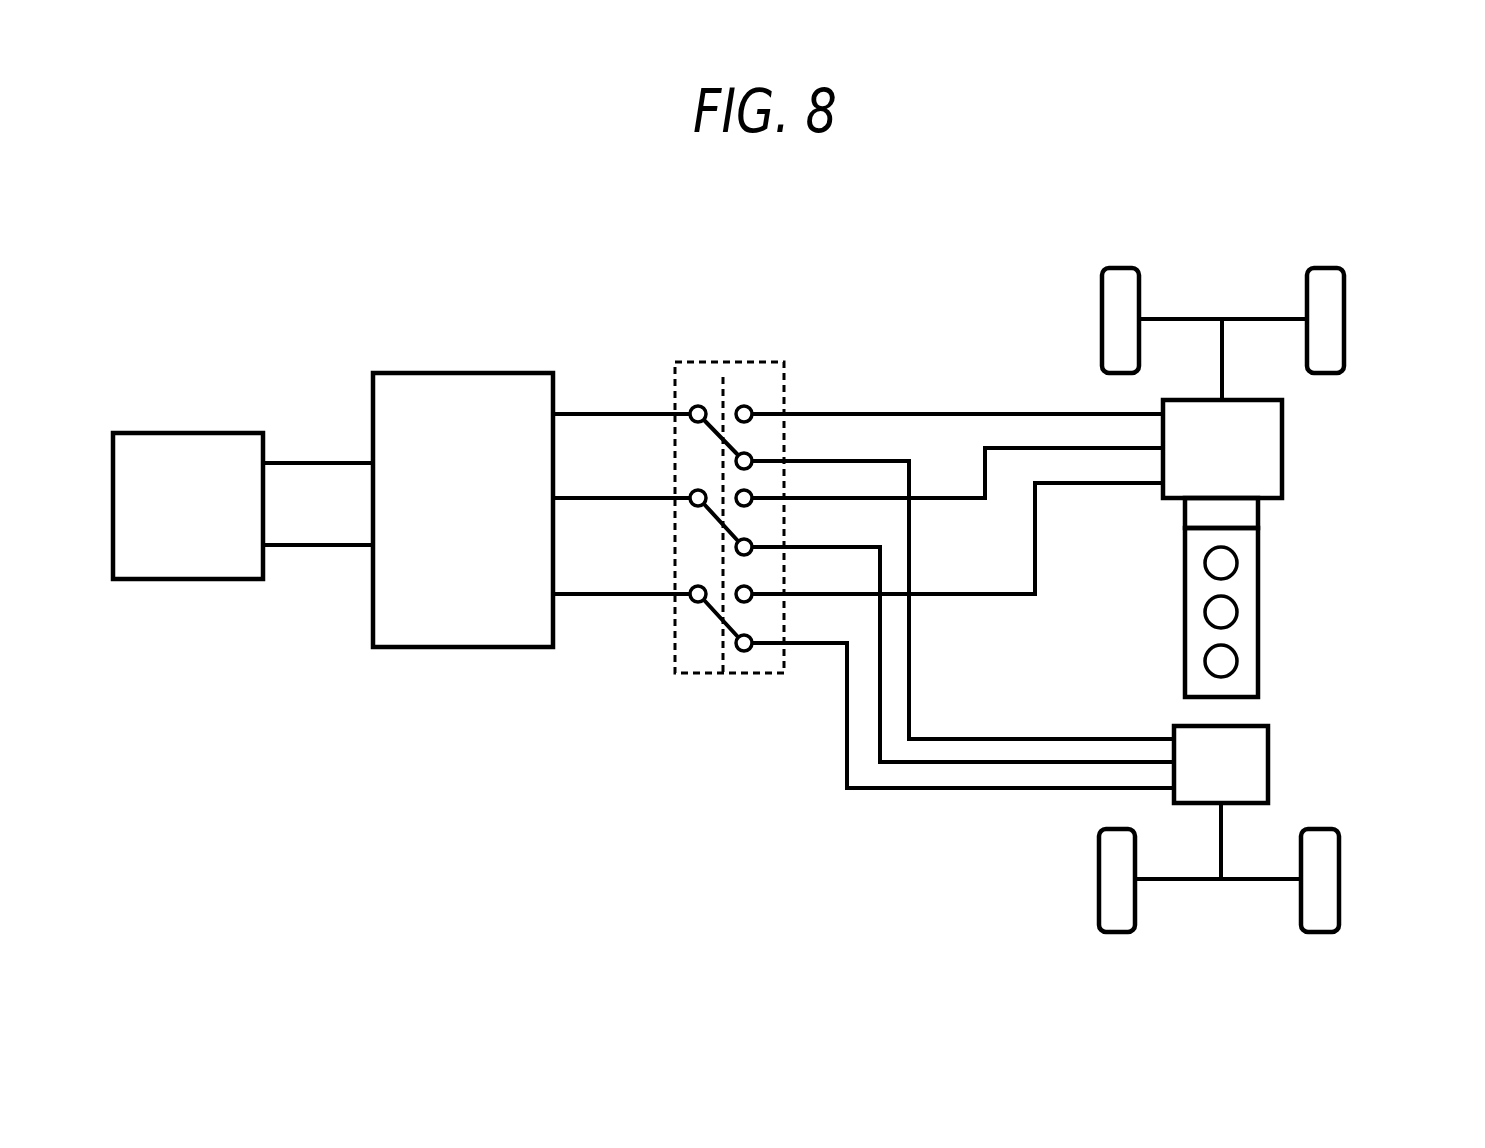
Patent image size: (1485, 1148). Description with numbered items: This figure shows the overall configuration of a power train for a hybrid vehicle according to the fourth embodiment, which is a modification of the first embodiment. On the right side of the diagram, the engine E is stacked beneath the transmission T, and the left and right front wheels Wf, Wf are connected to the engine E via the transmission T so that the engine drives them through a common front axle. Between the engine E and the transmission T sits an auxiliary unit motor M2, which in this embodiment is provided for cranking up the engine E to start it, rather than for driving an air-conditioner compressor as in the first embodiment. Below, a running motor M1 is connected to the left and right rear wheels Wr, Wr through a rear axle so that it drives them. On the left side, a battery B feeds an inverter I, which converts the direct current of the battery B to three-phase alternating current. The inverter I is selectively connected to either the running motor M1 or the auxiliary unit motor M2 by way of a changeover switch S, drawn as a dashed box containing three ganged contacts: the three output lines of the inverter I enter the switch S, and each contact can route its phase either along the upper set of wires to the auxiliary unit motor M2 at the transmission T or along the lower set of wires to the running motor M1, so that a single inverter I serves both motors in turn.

The battery B is at (188, 433).
The inverter I is at (468, 373).
The changeover switch S is at (731, 362).
The transmission T is at (1282, 448).
The auxiliary unit motor M2 is at (1258, 510).
The engine E is at (1258, 605).
The running motor M1 is at (1268, 764).
The front wheels Wf is at (1102, 318).
The rear wheels Wr is at (1099, 878).